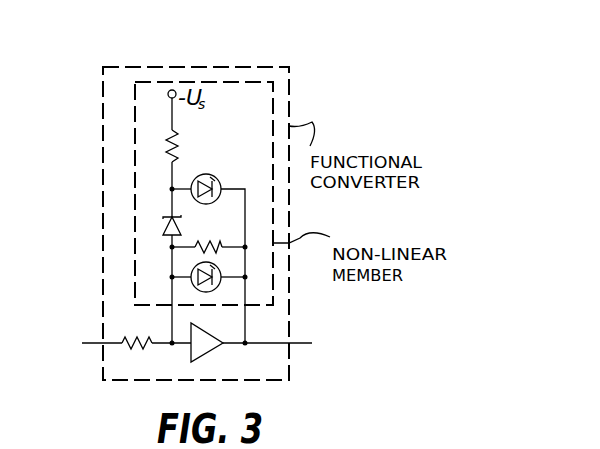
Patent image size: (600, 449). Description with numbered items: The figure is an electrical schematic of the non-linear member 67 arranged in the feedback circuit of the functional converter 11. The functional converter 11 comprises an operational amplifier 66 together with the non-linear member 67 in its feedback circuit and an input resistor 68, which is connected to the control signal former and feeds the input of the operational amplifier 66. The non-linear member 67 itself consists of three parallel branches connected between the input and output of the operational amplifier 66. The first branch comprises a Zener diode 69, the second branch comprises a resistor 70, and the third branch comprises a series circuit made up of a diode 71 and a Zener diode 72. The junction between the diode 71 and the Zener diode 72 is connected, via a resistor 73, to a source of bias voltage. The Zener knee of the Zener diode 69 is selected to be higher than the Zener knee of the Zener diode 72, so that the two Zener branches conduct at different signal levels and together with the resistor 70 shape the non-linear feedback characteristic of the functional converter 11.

The functional converter 11 is at (100, 201).
The operational amplifier 66 is at (212, 350).
The non-linear member 67 is at (134, 272).
The input resistor 68 is at (141, 336).
The Zener diode 69 is at (212, 293).
The resistor 70 is at (207, 243).
The diode 71 is at (162, 222).
The Zener diode 72 is at (217, 176).
The resistor 73 is at (179, 147).